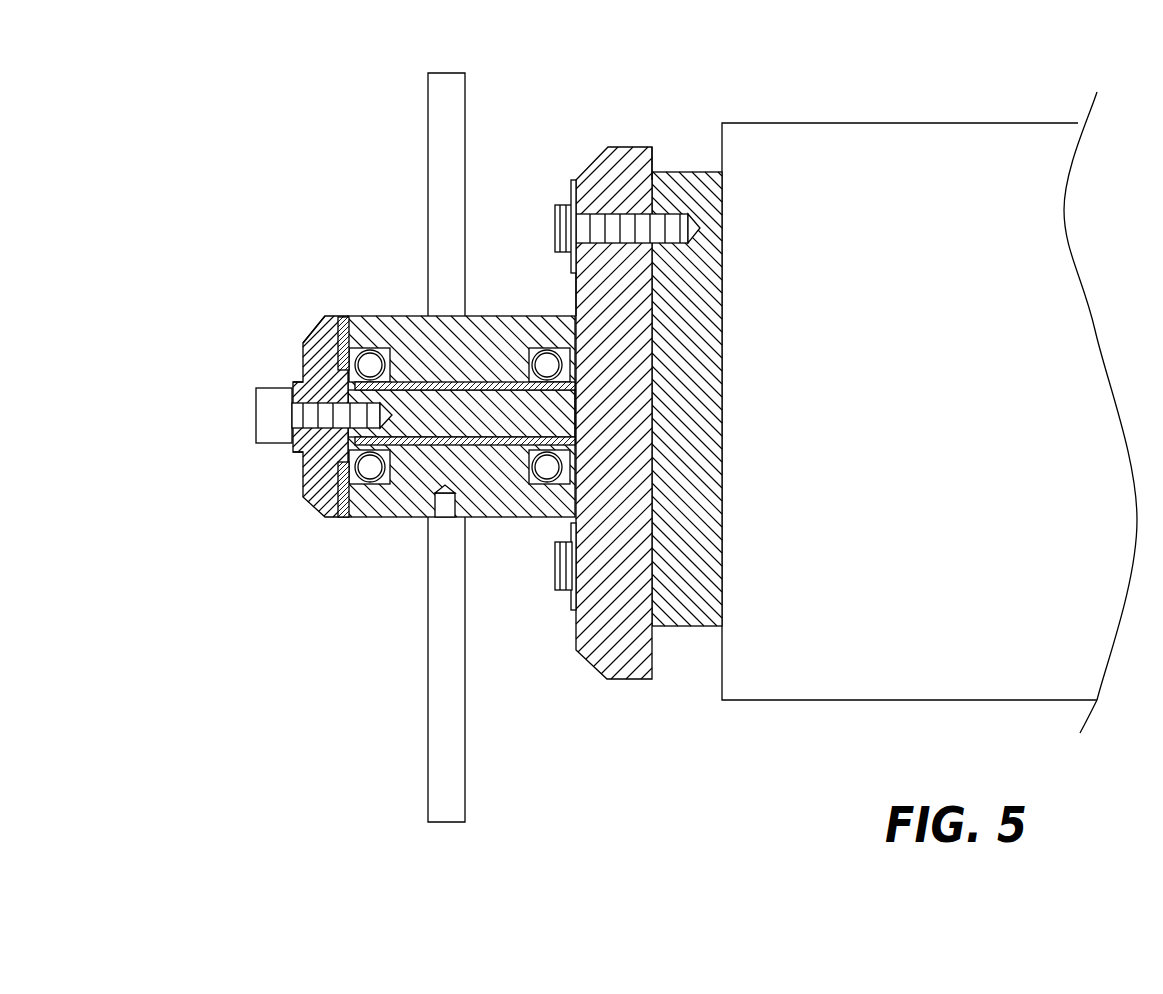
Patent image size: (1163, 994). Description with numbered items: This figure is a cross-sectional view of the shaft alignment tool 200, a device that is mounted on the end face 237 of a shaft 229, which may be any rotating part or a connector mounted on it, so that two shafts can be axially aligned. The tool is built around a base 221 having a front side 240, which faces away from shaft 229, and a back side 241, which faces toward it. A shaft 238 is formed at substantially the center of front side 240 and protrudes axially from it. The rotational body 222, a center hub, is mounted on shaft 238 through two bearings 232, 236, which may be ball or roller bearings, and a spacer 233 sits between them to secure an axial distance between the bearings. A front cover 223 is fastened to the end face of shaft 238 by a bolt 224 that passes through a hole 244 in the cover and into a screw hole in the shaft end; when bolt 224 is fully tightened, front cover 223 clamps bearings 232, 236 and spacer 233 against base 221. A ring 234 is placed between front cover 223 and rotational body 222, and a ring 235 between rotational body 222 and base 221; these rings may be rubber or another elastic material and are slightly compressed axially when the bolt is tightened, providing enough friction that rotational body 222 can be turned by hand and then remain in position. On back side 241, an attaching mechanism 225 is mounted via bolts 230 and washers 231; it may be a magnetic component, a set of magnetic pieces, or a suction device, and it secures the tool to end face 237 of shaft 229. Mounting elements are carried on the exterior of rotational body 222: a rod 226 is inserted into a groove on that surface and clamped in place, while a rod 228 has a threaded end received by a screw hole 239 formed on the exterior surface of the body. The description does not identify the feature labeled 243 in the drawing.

The shaft alignment tool 200 is at (284, 138).
The base 221 is at (620, 676).
The rotational body 222 is at (348, 520).
The front cover 223 is at (312, 497).
The bolt 224 is at (256, 420).
The attaching mechanism 225 is at (684, 625).
The rod 226 is at (465, 100).
The rod 228 is at (455, 683).
The shaft 229 is at (872, 140).
The bolt 230 is at (556, 205).
The washer 231 is at (564, 180).
The bearing 232 is at (352, 340).
The spacer 233 is at (388, 350).
The ring 234 is at (337, 320).
The ring 235 is at (540, 345).
The bearing 236 is at (492, 320).
The end face 237 is at (718, 138).
The shaft 238 is at (430, 430).
The screw hole 239 is at (468, 500).
The front side 240 is at (575, 300).
The back side 241 is at (655, 158).
The lower boss 243 is at (322, 453).
The hole 244 is at (300, 385).